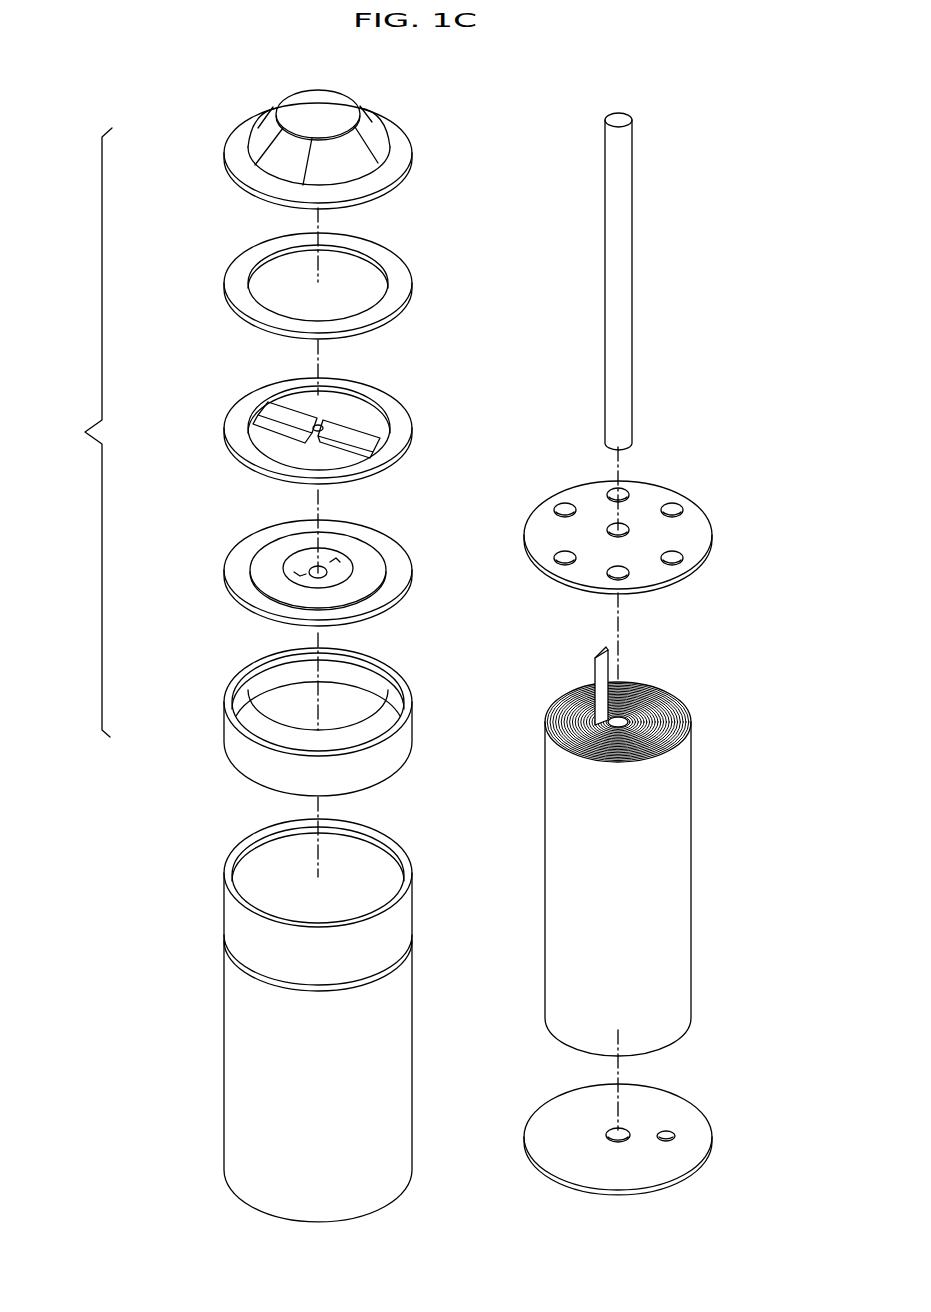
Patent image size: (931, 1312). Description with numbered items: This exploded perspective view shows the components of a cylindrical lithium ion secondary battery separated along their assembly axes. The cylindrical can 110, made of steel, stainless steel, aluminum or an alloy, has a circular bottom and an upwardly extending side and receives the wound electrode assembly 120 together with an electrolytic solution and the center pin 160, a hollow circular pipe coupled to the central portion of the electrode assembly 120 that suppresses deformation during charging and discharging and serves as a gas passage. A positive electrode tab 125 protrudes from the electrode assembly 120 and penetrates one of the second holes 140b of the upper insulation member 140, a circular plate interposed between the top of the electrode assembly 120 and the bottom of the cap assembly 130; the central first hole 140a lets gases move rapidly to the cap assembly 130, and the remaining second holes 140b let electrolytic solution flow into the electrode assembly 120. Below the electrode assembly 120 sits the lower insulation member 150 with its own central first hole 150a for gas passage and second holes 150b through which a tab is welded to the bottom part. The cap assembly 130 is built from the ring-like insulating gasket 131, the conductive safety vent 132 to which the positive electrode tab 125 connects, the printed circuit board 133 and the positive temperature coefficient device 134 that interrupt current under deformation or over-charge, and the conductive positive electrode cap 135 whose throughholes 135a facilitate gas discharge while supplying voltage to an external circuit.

The cylindrical can 110 is at (237, 1023).
The electrode assembly 120 is at (673, 874).
The positive electrode tab 125 is at (600, 652).
The cap assembly 130 is at (74, 432).
The insulating gasket 131 is at (235, 737).
The safety vent 132 is at (237, 570).
The printed circuit board 133 is at (235, 429).
The positive temperature coefficient device 134 is at (235, 281).
The positive electrode cap 135 is at (237, 146).
The throughholes 135a is at (348, 152).
The upper insulation member 140 is at (646, 530).
The first hole 140a is at (622, 528).
The second holes 140b is at (565, 510).
The lower insulation member 150 is at (666, 1134).
The first hole 150a is at (625, 1130).
The second holes 150b is at (670, 1131).
The center pin 160 is at (622, 271).